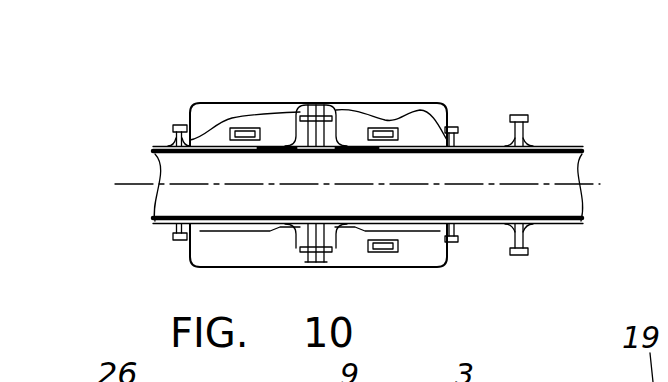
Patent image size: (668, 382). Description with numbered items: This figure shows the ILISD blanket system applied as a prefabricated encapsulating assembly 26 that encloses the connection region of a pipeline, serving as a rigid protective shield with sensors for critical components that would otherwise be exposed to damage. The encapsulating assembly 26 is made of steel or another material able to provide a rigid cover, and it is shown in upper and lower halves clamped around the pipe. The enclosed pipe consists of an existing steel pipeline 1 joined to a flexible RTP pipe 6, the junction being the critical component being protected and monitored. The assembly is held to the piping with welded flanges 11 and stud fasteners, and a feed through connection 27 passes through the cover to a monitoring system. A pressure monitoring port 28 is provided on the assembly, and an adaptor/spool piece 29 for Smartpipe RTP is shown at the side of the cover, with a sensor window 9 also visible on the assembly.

The steel pipeline 1 is at (471, 226).
The flexible RTP pipe 6 is at (160, 221).
The inspection window 9 is at (241, 127).
The welded flange 11 is at (180, 243).
The prefabricated encapsulating assembly 26 is at (389, 103).
The feed through connection 27 is at (302, 136).
The pressure monitoring port 28 is at (175, 127).
The adaptor/spool piece 29 is at (428, 106).